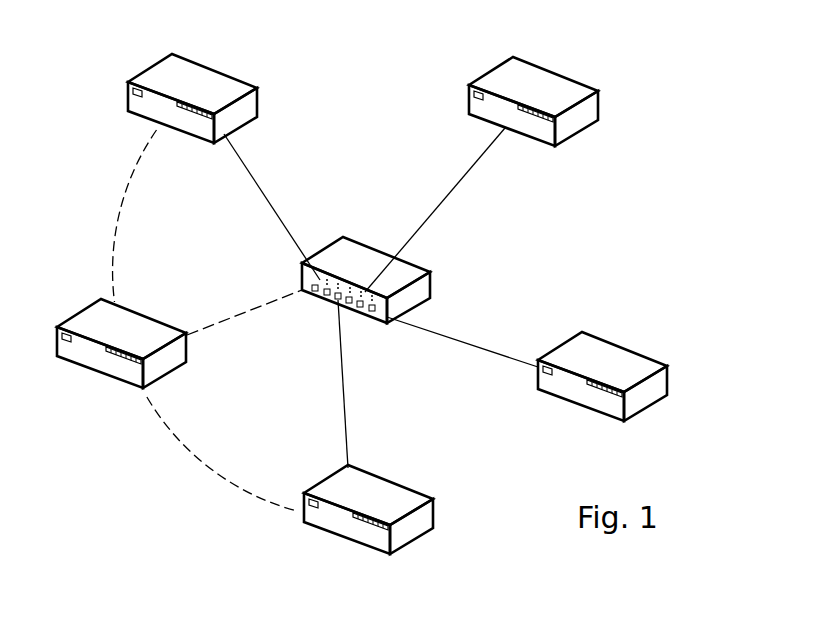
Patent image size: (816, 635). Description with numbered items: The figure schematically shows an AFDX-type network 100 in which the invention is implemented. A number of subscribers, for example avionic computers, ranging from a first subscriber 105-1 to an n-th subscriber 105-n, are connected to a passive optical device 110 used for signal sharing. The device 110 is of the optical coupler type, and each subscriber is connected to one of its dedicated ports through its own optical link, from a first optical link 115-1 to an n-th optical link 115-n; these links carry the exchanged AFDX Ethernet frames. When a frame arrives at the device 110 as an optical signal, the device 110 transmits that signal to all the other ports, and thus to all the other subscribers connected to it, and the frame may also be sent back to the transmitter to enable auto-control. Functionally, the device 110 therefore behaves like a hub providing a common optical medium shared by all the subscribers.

The AFDX-type network 100 is at (684, 119).
The subscriber 105-n is at (144, 70).
The subscriber 105-1 is at (545, 82).
The passive optical device 110 is at (432, 280).
The optical link 115-n is at (257, 175).
The optical link 115-1 is at (460, 187).